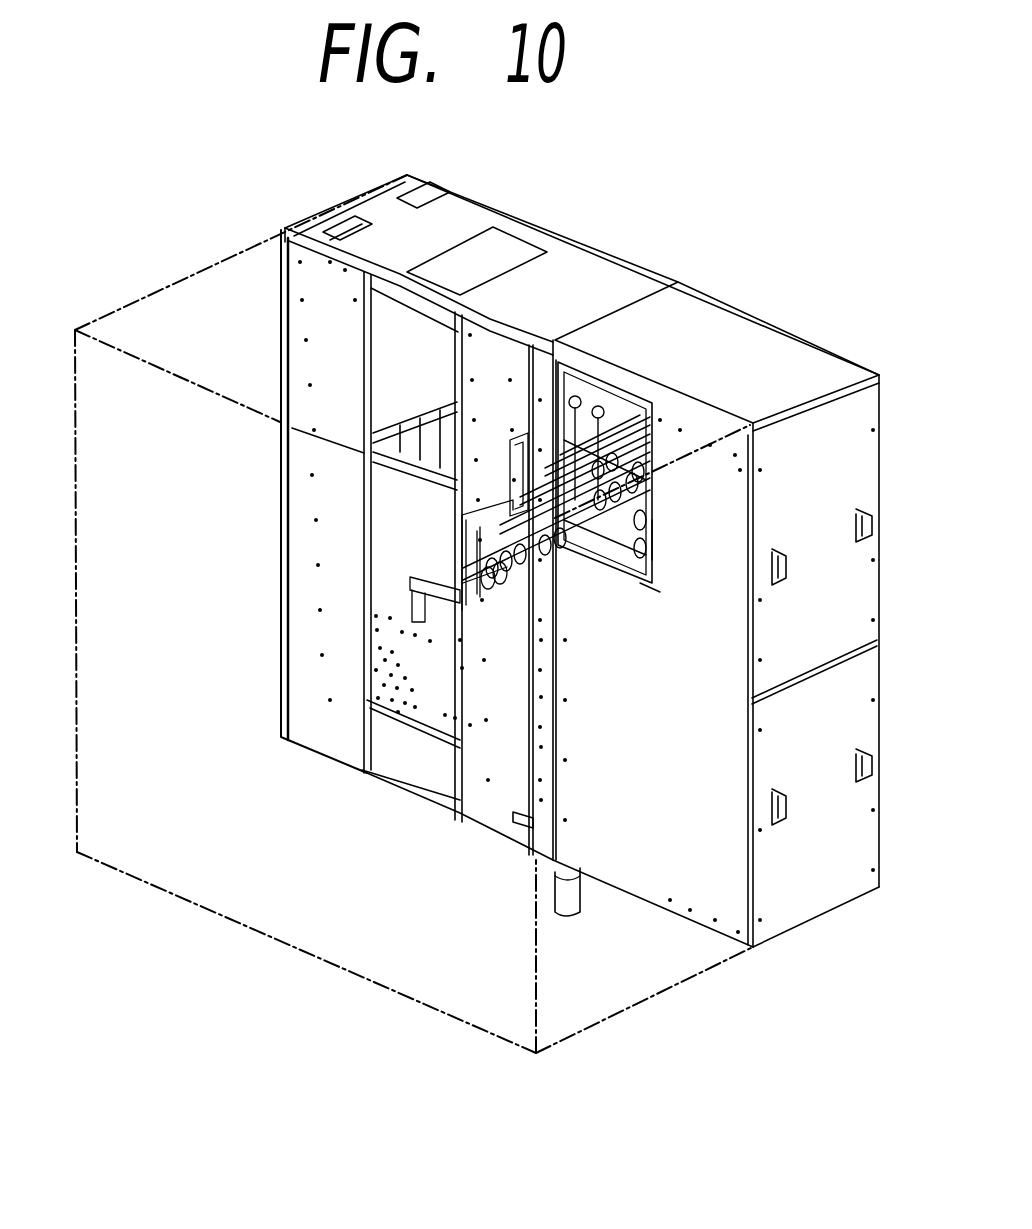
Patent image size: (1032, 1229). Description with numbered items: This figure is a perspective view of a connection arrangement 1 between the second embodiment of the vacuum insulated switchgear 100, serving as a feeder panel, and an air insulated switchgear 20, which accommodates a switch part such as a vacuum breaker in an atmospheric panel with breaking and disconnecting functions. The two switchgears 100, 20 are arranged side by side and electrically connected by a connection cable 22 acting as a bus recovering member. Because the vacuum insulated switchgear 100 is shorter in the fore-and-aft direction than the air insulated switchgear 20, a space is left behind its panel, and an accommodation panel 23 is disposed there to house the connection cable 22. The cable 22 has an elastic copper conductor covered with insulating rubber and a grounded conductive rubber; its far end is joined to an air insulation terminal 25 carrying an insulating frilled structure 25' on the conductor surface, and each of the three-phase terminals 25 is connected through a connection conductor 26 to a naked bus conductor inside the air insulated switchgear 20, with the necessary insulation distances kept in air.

The substrate processing apparatus 1 is at (640, 267).
The vacuum insulated switchgear 100 is at (562, 266).
The accommodation panel 23 is at (768, 340).
The connection cable 22 is at (583, 537).
The air insulation terminal 25 is at (542, 655).
The frilled structure 25' is at (571, 599).
The connection conductor 26 is at (468, 550).
The air insulated switchgear 20 is at (243, 892).